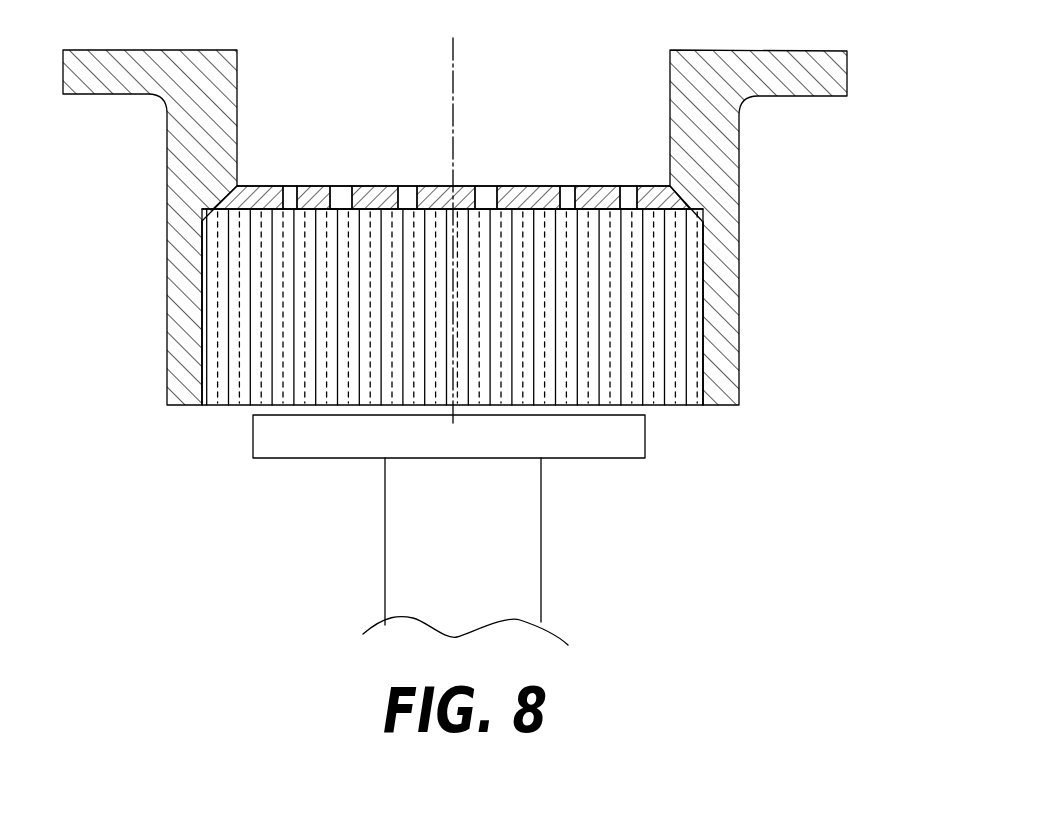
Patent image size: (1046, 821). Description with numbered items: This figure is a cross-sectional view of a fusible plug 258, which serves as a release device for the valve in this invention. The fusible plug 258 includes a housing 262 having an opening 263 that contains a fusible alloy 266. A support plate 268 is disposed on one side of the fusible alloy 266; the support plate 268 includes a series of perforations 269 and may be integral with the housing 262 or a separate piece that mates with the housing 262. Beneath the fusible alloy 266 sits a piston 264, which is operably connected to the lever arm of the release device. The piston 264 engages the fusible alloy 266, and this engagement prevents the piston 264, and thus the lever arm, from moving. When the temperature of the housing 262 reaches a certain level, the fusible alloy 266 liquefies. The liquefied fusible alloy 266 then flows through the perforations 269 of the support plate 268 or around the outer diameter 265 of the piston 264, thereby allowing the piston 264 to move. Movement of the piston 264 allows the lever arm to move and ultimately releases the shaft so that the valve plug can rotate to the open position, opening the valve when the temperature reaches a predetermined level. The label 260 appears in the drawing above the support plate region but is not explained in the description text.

The fusible plug 258 is at (768, 273).
The spacer and slot arrangement 260 is at (420, 119).
The housing 262 is at (727, 168).
The opening 263 is at (203, 406).
The piston 264 is at (477, 548).
The outer diameter 265 is at (253, 433).
The fusible alloy 266 is at (670, 398).
The support plate 268 is at (266, 186).
The perforations 269 is at (293, 186).